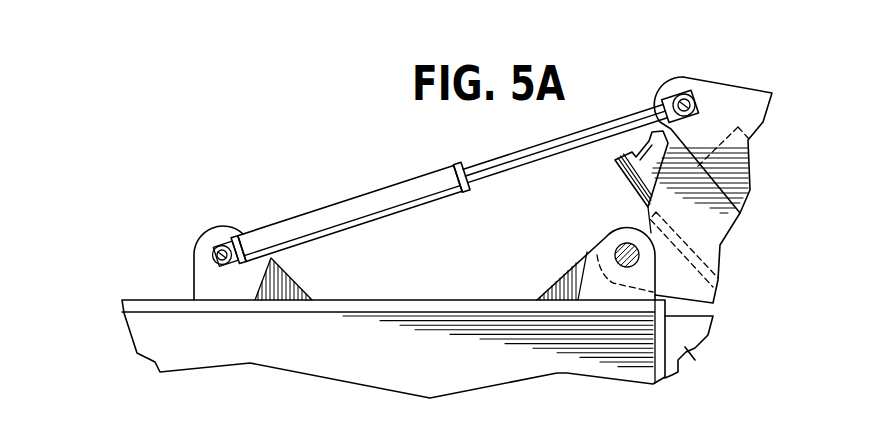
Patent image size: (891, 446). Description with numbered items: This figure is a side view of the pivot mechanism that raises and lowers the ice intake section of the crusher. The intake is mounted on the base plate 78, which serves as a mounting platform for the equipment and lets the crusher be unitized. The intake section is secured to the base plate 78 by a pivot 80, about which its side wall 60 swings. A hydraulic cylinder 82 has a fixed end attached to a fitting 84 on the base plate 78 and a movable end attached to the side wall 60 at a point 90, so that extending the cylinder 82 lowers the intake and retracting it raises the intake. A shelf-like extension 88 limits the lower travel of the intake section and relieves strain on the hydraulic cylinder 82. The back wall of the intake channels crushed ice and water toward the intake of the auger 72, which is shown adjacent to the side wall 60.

The side wall 60 is at (748, 162).
The auger 72 is at (615, 180).
The base plate 78 is at (442, 300).
The pivot 80 is at (615, 254).
The hydraulic cylinder 82 is at (395, 186).
The fitting 84 is at (194, 270).
The shelf-like extension 88 is at (688, 350).
The point 90 is at (687, 94).